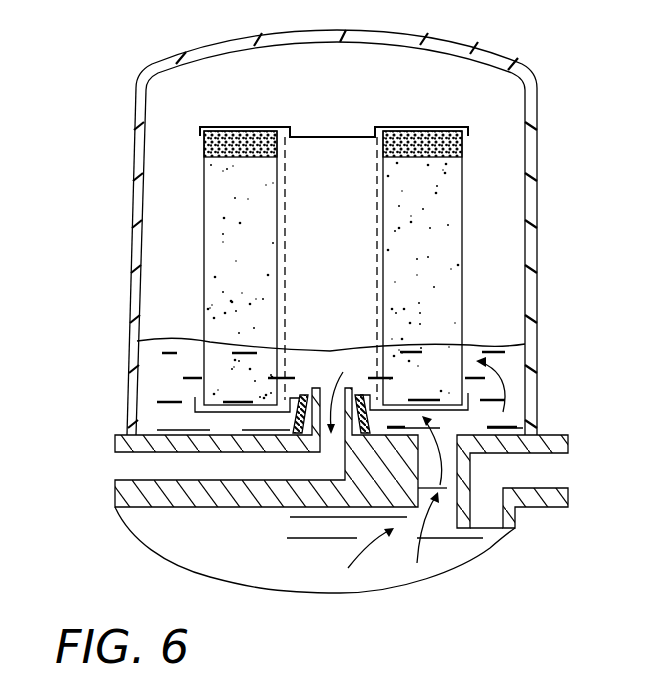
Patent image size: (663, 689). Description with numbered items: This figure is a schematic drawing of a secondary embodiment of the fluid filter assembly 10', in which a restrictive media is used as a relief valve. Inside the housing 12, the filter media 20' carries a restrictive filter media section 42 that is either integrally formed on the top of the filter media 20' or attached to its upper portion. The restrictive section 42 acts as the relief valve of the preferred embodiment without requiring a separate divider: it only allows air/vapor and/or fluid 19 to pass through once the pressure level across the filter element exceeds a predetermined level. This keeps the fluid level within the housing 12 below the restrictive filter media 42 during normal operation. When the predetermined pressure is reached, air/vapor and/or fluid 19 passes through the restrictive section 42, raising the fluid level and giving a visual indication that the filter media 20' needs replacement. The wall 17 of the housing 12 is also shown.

The fluid filter assembly 10' is at (370, 383).
The housing 12 is at (118, 375).
The housing wall 17 is at (536, 258).
The fluid 19 is at (510, 362).
The filter media 20' is at (409, 268).
The restrictive filter media section 42 is at (448, 144).